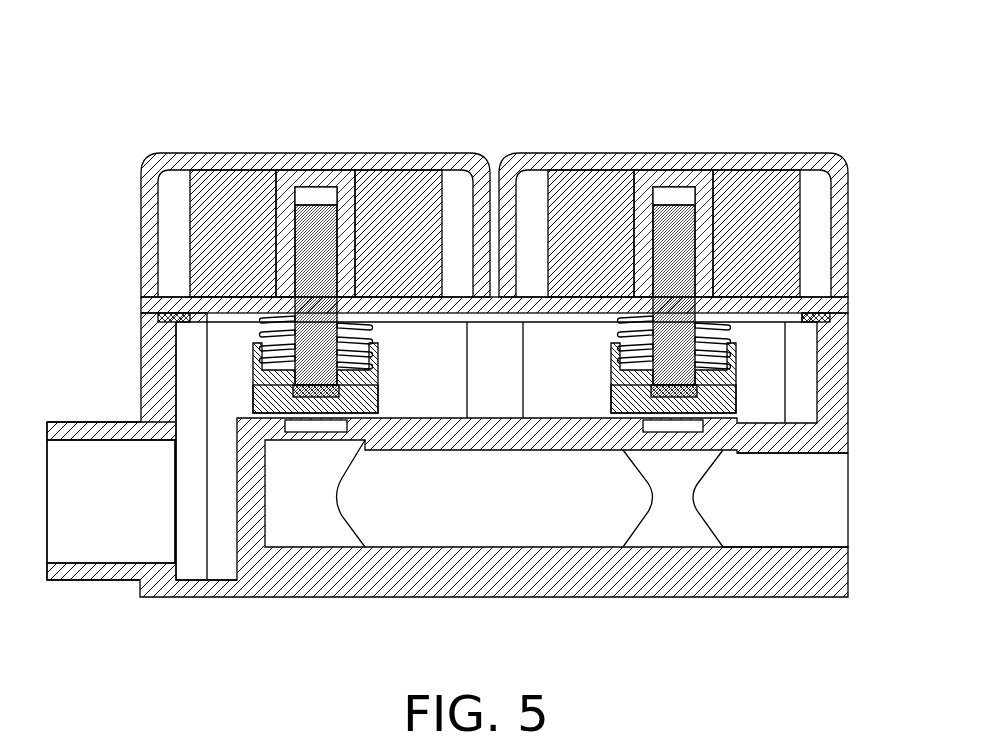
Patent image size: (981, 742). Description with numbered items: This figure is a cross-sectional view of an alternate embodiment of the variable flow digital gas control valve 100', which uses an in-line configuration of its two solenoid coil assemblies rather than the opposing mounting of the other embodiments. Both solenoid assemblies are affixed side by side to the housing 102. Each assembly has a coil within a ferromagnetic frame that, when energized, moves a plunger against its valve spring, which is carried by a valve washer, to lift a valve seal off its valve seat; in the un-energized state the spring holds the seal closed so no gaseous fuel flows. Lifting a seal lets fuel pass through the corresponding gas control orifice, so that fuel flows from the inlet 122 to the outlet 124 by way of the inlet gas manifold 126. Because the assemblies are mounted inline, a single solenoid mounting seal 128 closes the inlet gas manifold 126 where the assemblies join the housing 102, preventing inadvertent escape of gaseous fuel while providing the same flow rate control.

The variable flow digital gas control valve 100' is at (475, 333).
The housing 102 is at (514, 597).
The inlet 122 is at (88, 548).
The outlet 124 is at (810, 535).
The inlet gas manifold 126 is at (218, 370).
The solenoid mounting seal 128 is at (166, 318).